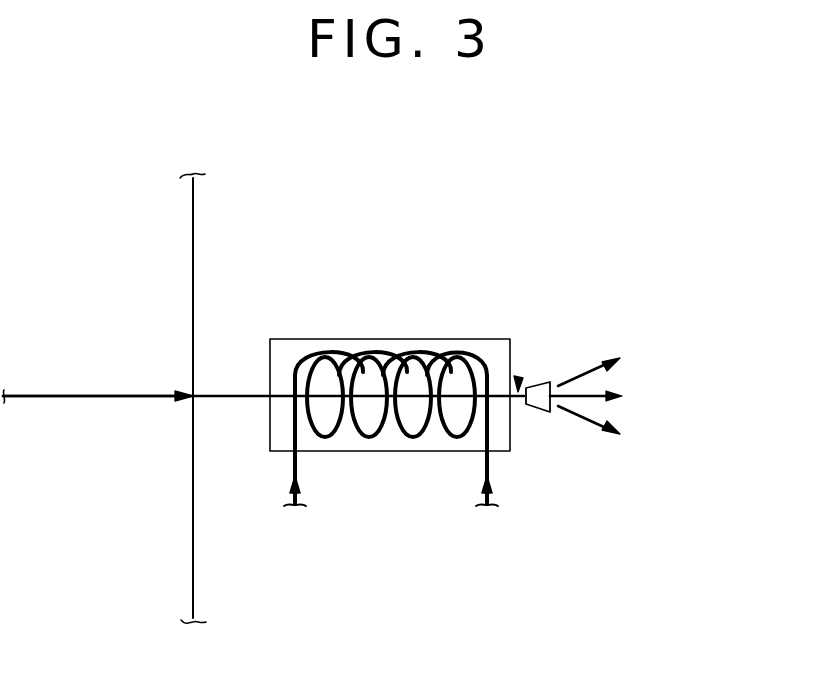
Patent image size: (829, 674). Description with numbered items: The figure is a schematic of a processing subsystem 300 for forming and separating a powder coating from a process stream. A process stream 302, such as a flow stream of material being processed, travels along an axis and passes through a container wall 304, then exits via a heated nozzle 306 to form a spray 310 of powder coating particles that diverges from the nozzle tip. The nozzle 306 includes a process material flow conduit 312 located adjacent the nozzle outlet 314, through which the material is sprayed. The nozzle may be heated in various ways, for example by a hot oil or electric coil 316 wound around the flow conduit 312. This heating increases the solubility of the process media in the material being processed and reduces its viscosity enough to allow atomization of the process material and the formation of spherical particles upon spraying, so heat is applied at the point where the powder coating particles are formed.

The processing subsystem 300 is at (384, 203).
The process stream 302 is at (93, 393).
The container wall 304 is at (192, 281).
The heated nozzle 306 is at (519, 380).
The spray 310 is at (617, 387).
The process material flow conduit 312 is at (283, 395).
The nozzle outlet 314 is at (537, 410).
The electric coil 316 is at (358, 434).